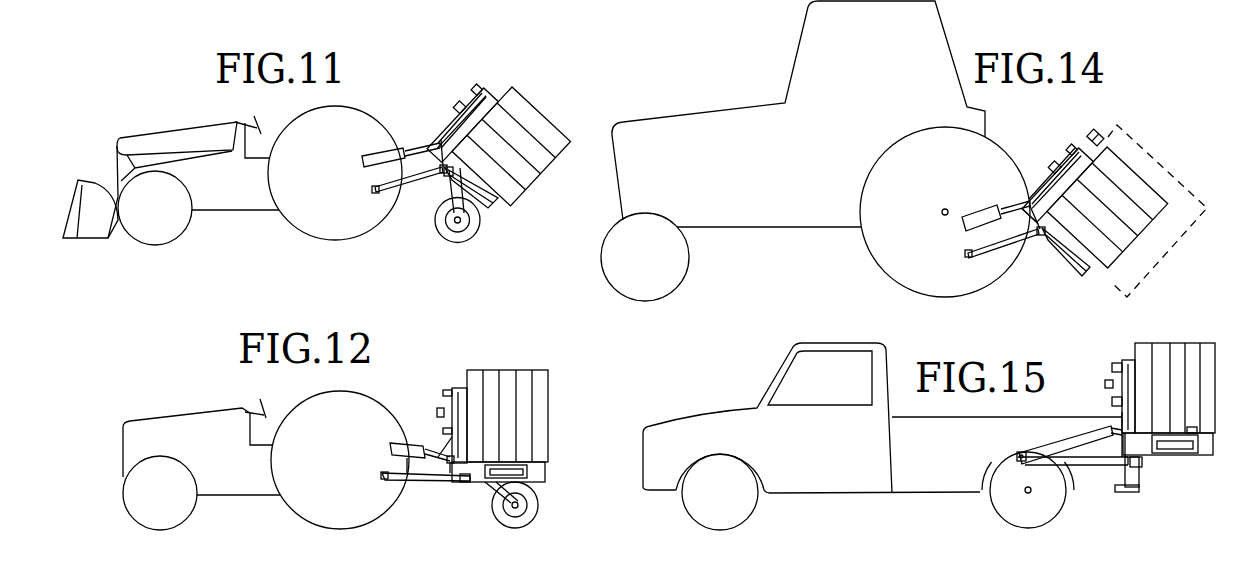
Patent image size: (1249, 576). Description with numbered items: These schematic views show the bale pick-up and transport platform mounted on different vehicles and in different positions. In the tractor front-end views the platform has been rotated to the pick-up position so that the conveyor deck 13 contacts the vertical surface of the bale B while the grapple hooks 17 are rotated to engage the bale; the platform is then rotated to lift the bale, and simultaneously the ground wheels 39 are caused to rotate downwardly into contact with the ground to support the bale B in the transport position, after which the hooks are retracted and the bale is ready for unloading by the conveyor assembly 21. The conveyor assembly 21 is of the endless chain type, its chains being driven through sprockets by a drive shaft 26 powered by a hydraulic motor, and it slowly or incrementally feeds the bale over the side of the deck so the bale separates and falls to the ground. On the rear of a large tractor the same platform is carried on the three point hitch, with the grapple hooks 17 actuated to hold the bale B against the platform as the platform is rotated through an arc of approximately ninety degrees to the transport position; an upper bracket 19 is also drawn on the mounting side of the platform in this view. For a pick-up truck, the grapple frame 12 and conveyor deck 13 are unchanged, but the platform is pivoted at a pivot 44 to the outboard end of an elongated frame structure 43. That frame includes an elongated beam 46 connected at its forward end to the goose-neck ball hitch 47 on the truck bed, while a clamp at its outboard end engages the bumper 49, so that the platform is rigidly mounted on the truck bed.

In FIG. 11, the bale B is at (535, 118).
In FIG. 12, the bale B is at (543, 392).
In FIG. 14, the bale B is at (1128, 215).
In FIG. 15, the bale B is at (1178, 356).
In FIG. 11, the ground wheels 39 is at (453, 241).
In FIG. 12, the ground wheels 39 is at (502, 518).
In FIG. 14, the grapple frame 12 is at (1058, 167).
In FIG. 15, the grapple frame 12 is at (1130, 362).
In FIG. 14, the conveyor deck 13 is at (1097, 276).
In FIG. 14, the grapple hooks 17 is at (1147, 105).
In FIG. 14, the upper bracket 19 is at (1058, 158).
In FIG. 14, the conveyor assembly 21 is at (1058, 265).
In FIG. 15, the conveyor assembly 21 is at (1186, 463).
In FIG. 14, the drive shaft 26 is at (1087, 143).
In FIG. 15, the elongated frame structure 43 is at (1104, 480).
In FIG. 15, the pivot 44 is at (1143, 460).
In FIG. 15, the elongated beam 46 is at (1083, 462).
In FIG. 15, the goose-neck ball hitch 47 is at (1018, 456).
In FIG. 15, the bumper 49 is at (1127, 493).